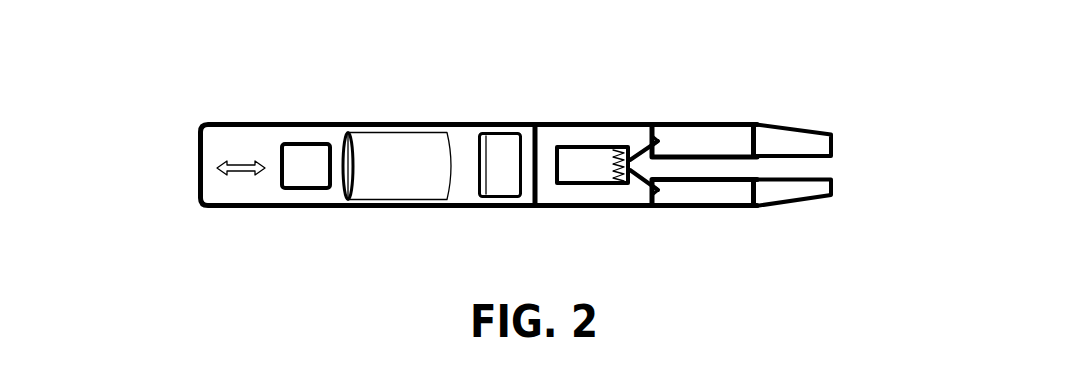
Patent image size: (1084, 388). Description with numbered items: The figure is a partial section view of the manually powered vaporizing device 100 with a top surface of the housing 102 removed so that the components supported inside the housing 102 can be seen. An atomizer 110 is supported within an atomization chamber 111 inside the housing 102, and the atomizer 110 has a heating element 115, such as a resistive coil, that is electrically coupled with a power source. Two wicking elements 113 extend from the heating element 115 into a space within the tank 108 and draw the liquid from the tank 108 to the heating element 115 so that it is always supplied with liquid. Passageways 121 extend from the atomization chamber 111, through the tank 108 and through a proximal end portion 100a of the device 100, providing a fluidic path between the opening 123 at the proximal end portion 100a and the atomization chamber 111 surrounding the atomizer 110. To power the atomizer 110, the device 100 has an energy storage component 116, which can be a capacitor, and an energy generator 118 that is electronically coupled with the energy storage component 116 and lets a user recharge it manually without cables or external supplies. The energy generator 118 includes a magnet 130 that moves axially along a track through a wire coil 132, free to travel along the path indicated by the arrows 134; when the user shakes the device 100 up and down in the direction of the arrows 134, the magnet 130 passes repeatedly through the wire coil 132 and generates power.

The manually powered vaporizing device 100 is at (245, 30).
The proximal end portion 100a is at (787, 126).
The housing 102 is at (140, 118).
The tank 108 is at (707, 137).
The atomizer 110 is at (593, 187).
The atomization chamber 111 is at (539, 188).
The wicking elements 113 is at (637, 145).
The heating element 115 is at (617, 152).
The energy storage component 116 is at (485, 145).
The energy generator 118 is at (340, 108).
The passageways 121 is at (792, 166).
The opening 123 is at (837, 167).
The magnet 130 is at (312, 182).
The wire coil 132 is at (406, 175).
The arrows 134 is at (237, 178).